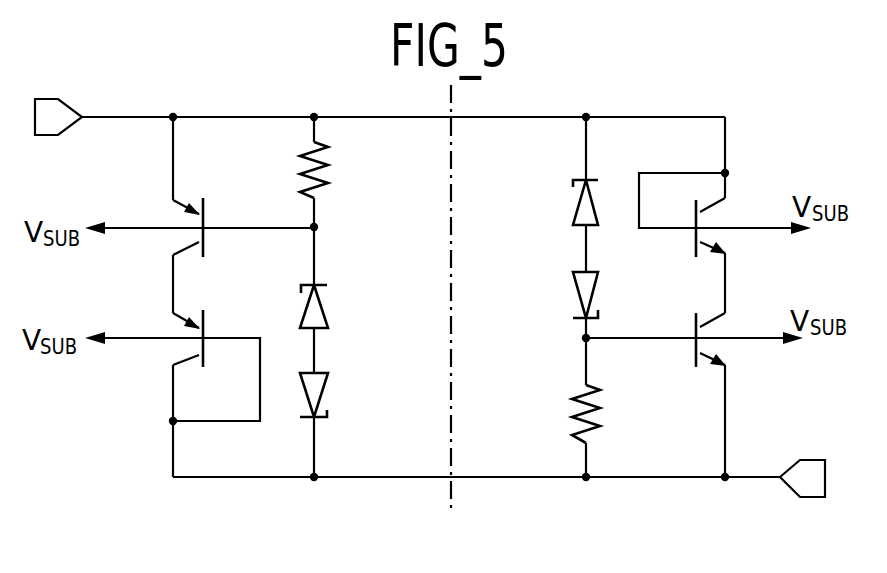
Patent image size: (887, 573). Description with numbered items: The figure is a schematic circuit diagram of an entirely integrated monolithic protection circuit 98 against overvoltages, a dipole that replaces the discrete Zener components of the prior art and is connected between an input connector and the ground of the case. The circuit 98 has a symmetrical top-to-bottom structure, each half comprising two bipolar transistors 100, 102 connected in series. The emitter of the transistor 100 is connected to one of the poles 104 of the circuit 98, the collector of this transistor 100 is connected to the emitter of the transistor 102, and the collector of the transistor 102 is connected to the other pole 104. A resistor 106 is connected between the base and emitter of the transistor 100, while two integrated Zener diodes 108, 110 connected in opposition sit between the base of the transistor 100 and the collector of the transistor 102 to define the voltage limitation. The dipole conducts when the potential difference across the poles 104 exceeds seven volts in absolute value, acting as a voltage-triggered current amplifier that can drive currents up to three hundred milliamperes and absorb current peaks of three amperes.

The circuit of voltage limitation 98 is at (712, 72).
The bipolar transistor 100 is at (206, 206).
The bipolar transistor 102 is at (206, 318).
The pole 104 is at (89, 114).
The resistor 106 is at (328, 170).
The integrated Zener diode 108 is at (322, 316).
The integrated Zener diode 110 is at (322, 398).